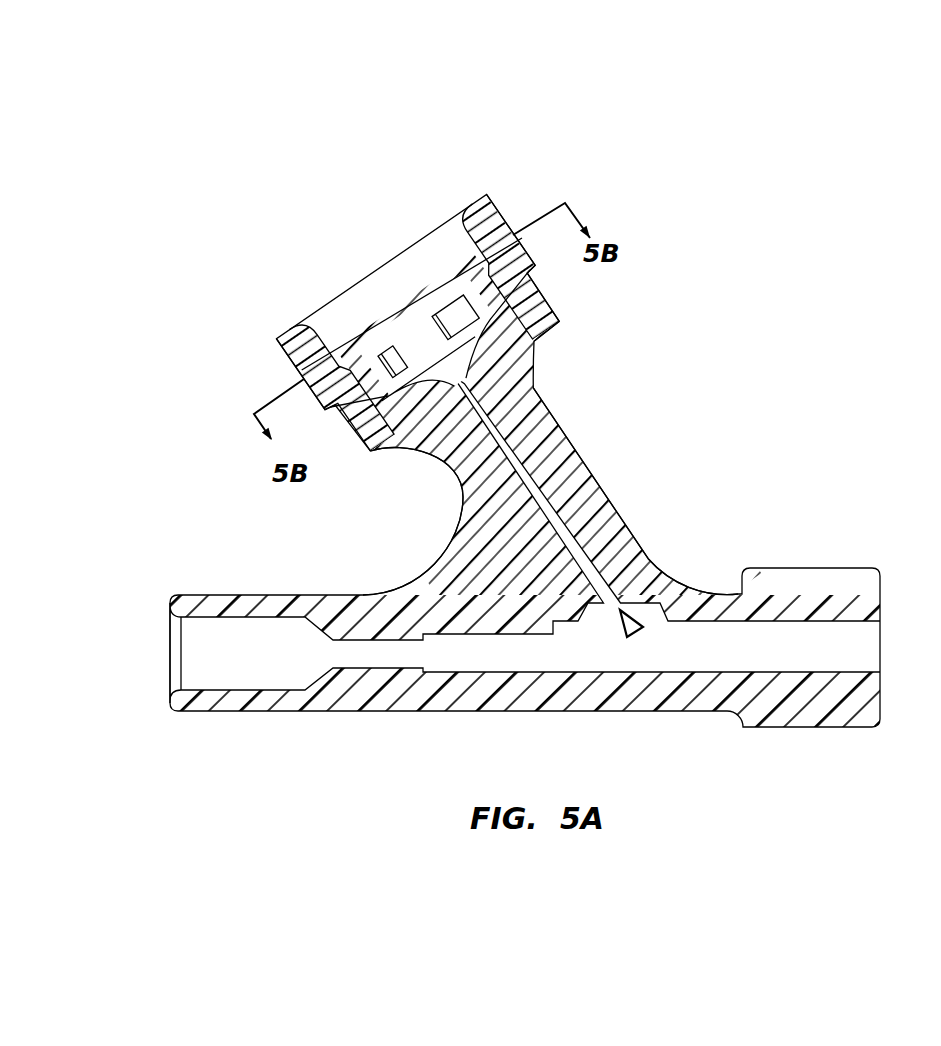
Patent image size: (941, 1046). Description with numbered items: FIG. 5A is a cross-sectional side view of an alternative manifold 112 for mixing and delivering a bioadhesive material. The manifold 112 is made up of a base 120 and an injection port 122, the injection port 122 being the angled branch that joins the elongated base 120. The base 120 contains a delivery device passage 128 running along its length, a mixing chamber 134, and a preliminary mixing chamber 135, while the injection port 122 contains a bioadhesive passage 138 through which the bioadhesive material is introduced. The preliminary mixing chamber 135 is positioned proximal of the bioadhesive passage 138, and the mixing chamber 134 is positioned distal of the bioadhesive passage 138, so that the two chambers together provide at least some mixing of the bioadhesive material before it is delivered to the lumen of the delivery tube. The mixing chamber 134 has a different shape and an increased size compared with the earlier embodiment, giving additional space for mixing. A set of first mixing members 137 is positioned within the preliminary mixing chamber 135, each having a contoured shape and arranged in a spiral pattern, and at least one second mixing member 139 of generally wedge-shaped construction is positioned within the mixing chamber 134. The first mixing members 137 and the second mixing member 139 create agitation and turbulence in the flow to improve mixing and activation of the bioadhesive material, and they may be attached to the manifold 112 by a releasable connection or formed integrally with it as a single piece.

The manifold 112 is at (711, 416).
The base 120 is at (648, 716).
The injection port 122 is at (504, 204).
The delivery device passage 128 is at (493, 657).
The mixing chamber 134 is at (658, 613).
The preliminary mixing chamber 135 is at (497, 316).
The first mixing members 137 is at (446, 309).
The bioadhesive passage 138 is at (533, 483).
The second mixing member 139 is at (632, 610).